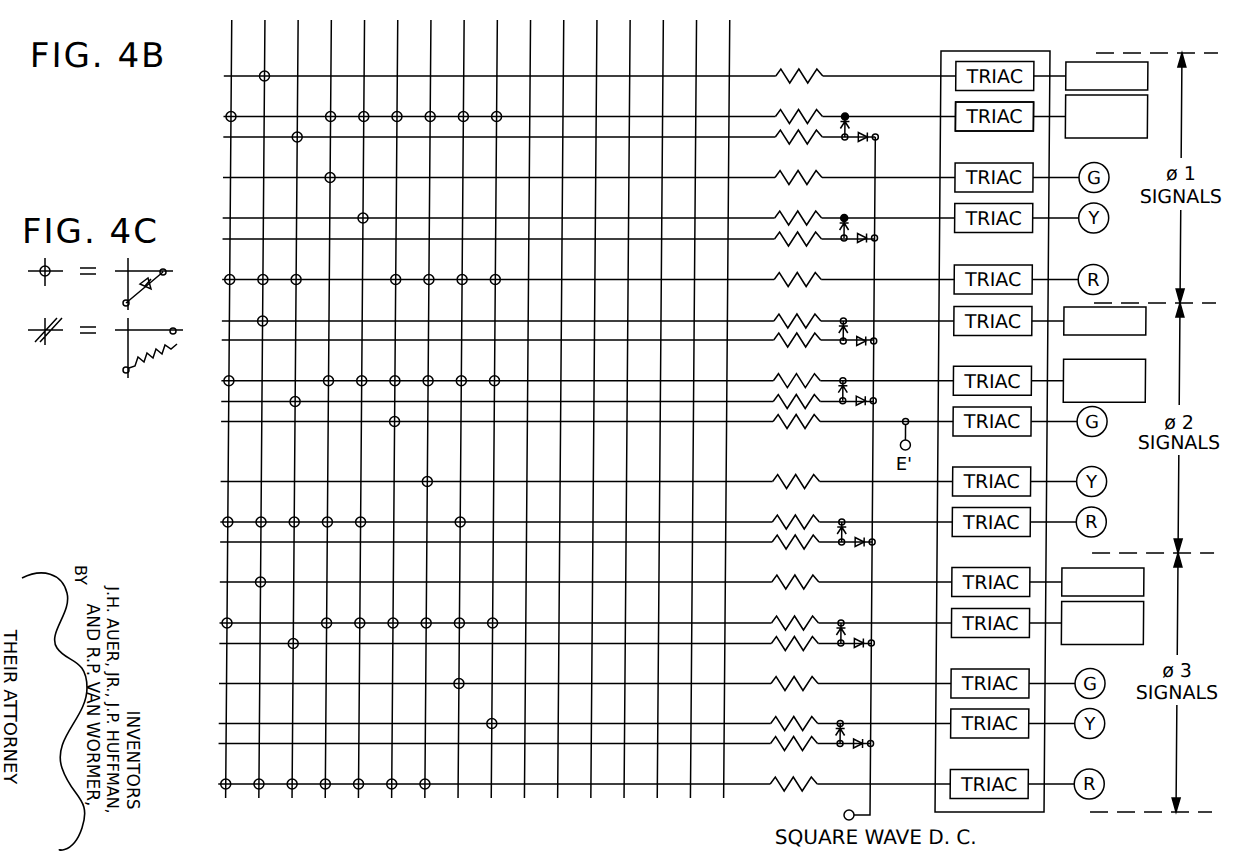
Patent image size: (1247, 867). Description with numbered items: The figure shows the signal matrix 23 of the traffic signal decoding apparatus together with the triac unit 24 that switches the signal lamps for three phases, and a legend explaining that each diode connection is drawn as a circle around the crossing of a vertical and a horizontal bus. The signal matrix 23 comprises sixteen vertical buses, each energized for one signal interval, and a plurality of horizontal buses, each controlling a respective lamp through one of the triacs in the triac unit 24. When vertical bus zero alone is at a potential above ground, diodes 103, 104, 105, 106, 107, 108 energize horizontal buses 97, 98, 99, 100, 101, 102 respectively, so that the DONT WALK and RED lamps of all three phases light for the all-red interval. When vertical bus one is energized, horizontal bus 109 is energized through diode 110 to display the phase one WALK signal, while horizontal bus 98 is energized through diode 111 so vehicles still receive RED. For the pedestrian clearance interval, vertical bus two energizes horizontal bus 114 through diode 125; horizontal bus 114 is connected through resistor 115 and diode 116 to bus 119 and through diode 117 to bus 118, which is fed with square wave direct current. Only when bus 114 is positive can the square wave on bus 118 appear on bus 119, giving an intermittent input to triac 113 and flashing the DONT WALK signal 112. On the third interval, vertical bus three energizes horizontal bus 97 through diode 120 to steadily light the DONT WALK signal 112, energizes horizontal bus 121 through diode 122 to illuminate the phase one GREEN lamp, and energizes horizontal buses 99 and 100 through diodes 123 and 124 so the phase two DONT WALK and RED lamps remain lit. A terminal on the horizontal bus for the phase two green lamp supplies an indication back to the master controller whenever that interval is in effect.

The signal matrix 23 is at (225, 55).
The triac unit 24 is at (998, 49).
The horizontal bus 97 is at (748, 110).
The horizontal bus 98 is at (748, 274).
The horizontal bus 99 is at (750, 378).
The horizontal bus 100 is at (755, 518).
The horizontal bus 101 is at (747, 620).
The horizontal bus 102 is at (733, 785).
The diode 103 is at (231, 120).
The diode 104 is at (230, 284).
The diode 105 is at (240, 370).
The diode 106 is at (230, 518).
The diode 107 is at (230, 619).
The diode 108 is at (231, 780).
The horizontal bus 109 is at (748, 70).
The diode 110 is at (263, 79).
The diode 111 is at (263, 284).
The DONT WALK signal 112 is at (1097, 139).
The triac 113 is at (1010, 132).
The horizontal bus 114 is at (752, 139).
The resistor 115 is at (805, 139).
The diode 116 is at (851, 131).
The diode 117 is at (860, 144).
The bus 118 is at (876, 242).
The bus 119 is at (866, 117).
The diode 120 is at (330, 120).
The horizontal bus 121 is at (749, 180).
The diode 122 is at (330, 182).
The diode 123 is at (332, 378).
The diode 124 is at (332, 518).
The diode 125 is at (297, 141).